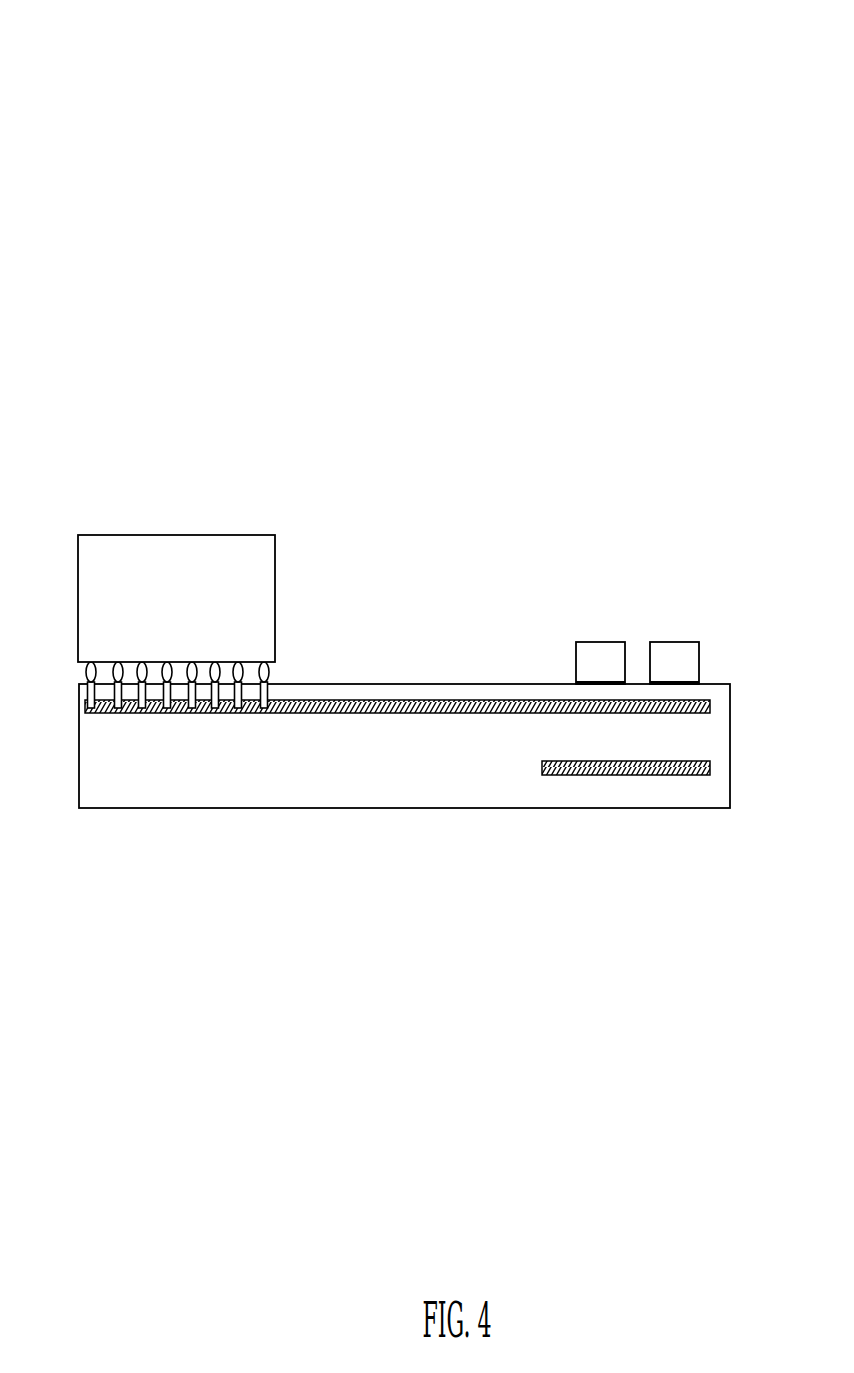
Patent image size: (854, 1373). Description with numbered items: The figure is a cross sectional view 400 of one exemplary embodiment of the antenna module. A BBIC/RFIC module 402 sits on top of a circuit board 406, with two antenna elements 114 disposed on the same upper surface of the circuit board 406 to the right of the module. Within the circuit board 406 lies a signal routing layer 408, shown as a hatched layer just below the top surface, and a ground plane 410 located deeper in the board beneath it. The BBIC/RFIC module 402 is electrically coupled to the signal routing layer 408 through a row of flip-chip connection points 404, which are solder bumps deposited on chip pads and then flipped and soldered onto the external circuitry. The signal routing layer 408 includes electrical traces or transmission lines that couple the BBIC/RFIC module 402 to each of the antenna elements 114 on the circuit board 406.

The cross sectional view 400 is at (449, 28).
The BBIC/RFIC module 402 is at (197, 535).
The flip-chip connection points 404 is at (270, 672).
The circuit board 406 is at (78, 750).
The signal routing layer 408 is at (428, 713).
The ground plane 410 is at (617, 776).
The antenna elements 114 is at (603, 642).